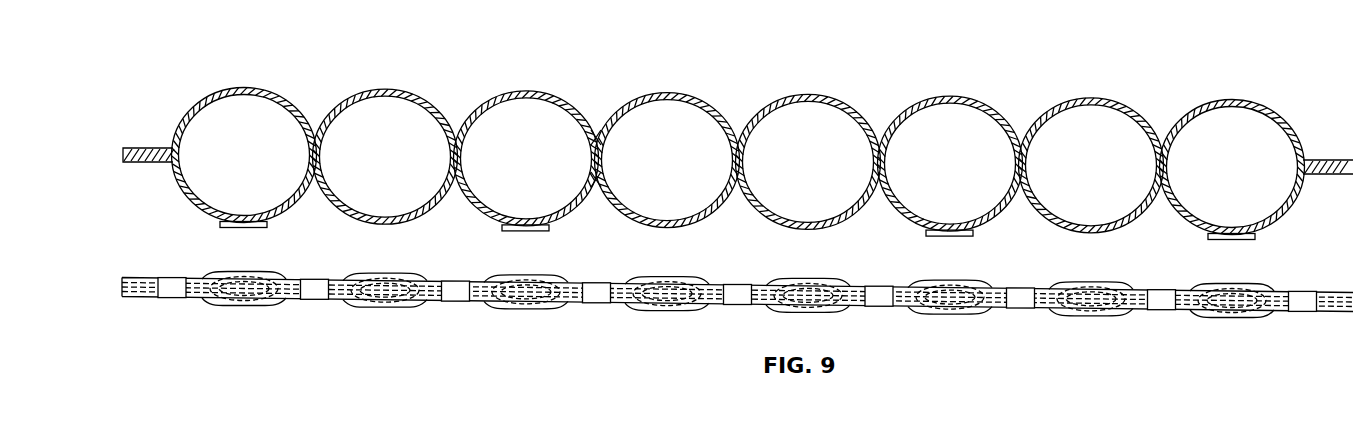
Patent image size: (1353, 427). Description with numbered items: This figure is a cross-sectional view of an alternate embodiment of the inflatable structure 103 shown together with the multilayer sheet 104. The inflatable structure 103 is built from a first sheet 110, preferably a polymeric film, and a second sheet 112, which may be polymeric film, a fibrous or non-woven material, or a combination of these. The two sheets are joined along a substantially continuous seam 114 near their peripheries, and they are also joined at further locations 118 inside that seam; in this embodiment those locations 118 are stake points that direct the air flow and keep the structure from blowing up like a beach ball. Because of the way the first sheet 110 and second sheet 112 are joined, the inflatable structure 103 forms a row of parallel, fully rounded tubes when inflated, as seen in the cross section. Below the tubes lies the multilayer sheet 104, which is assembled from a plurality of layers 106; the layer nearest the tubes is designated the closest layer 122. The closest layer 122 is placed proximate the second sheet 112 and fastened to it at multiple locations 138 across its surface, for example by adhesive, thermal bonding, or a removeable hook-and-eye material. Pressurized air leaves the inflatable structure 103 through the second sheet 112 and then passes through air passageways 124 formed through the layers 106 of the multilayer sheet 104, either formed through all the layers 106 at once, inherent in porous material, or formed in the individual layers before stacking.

The inflatable structure 103 is at (455, 68).
The multilayer sheet 104 is at (657, 318).
The layers 106 is at (1105, 315).
The first sheet 110 is at (808, 95).
The second sheet 112 is at (665, 229).
The seam 114 is at (122, 153).
The joining locations 118 is at (597, 143).
The closest layer 122 is at (1075, 283).
The air passageways 124 is at (470, 308).
The attachment locations 138 is at (237, 228).